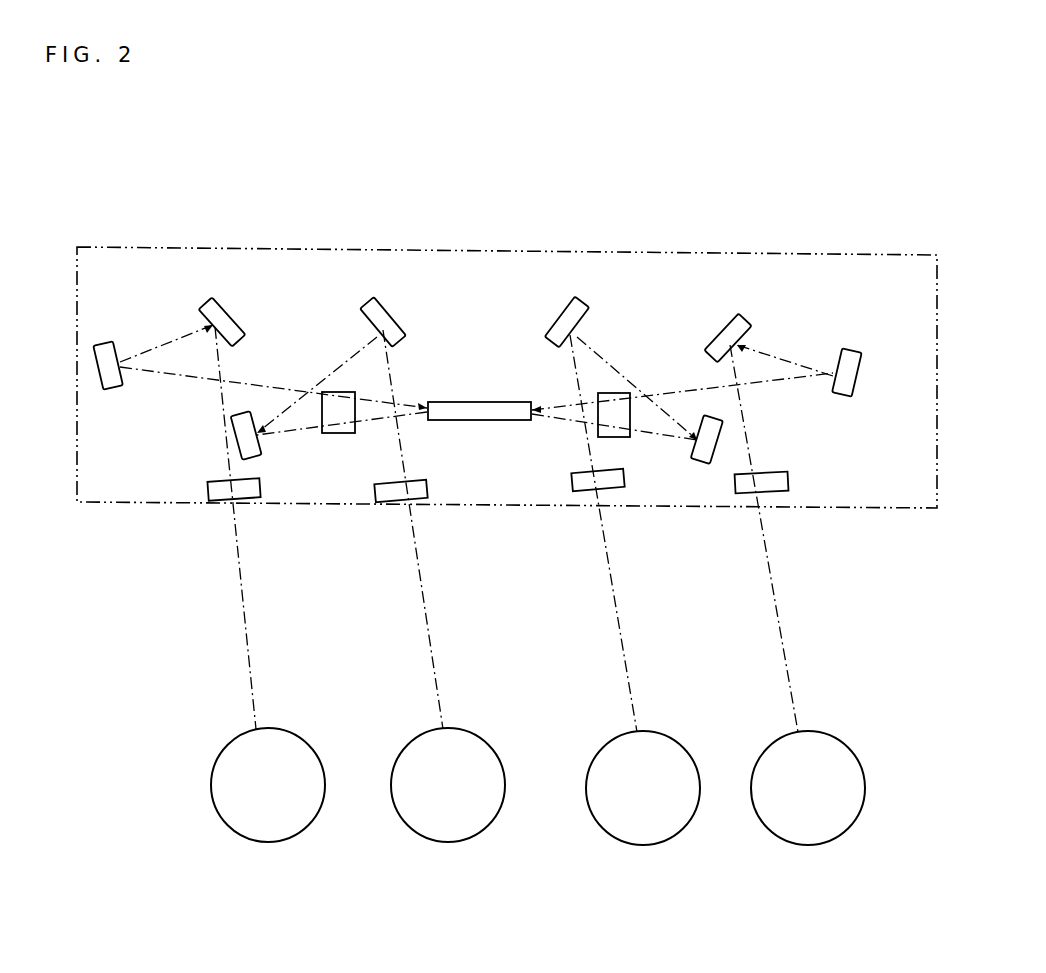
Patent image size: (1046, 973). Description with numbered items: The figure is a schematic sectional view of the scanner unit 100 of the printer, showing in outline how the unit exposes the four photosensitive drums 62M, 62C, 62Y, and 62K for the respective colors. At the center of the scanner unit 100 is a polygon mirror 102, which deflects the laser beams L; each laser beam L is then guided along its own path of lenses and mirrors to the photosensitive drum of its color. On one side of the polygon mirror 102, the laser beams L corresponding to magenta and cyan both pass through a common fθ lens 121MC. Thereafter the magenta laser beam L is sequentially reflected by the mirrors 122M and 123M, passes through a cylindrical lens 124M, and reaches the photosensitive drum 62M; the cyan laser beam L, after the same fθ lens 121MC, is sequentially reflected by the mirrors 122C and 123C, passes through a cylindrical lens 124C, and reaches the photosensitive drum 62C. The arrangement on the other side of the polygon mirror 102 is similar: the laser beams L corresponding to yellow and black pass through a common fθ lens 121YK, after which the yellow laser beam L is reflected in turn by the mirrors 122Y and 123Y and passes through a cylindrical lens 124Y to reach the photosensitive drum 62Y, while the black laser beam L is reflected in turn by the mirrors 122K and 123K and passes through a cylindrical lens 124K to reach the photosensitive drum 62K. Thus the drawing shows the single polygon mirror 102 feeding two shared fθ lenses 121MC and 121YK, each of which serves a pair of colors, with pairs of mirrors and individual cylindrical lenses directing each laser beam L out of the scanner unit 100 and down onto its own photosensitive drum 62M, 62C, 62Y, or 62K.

The scanner unit 100 is at (215, 248).
The polygon mirror 102 is at (458, 410).
The fθ lens 121YK is at (337, 433).
The fθ lens 121MC is at (614, 437).
The mirror 122K is at (108, 343).
The mirror 122Y is at (252, 456).
The mirror 122C is at (699, 460).
The mirror 122M is at (853, 350).
The mirror 123K is at (230, 307).
The mirror 123Y is at (388, 304).
The mirror 123C is at (584, 306).
The mirror 123M is at (741, 318).
The cylindrical lens 124K is at (208, 488).
The cylindrical lens 124Y is at (405, 502).
The cylindrical lens 124C is at (582, 490).
The cylindrical lens 124M is at (773, 492).
The photosensitive drum 62K is at (237, 738).
The photosensitive drum 62Y is at (450, 730).
The photosensitive drum 62C is at (612, 740).
The photosensitive drum 62M is at (817, 733).
The laser beam L is at (417, 620).